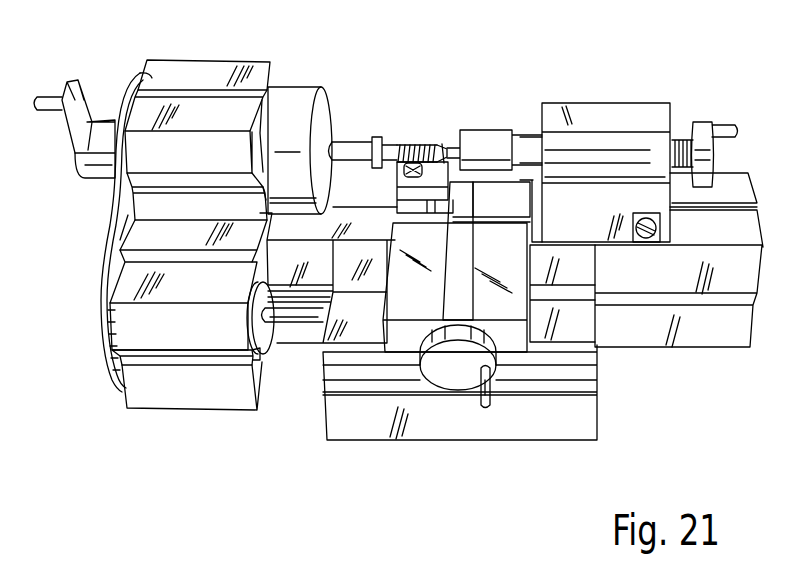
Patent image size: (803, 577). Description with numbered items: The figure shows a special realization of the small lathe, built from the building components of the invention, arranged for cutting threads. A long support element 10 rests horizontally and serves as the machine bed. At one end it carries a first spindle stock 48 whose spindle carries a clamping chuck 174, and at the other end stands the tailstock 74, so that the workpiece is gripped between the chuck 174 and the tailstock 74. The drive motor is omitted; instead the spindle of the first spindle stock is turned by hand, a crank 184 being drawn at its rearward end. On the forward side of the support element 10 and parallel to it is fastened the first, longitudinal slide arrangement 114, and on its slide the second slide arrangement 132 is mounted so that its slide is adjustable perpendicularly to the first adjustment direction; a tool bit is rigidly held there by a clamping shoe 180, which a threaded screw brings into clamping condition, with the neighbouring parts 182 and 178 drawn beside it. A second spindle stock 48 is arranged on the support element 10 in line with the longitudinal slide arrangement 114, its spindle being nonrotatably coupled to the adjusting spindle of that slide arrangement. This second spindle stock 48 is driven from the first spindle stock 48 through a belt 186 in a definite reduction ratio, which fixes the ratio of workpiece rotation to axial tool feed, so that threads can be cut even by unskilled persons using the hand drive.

The crank handle 184 is at (77, 99).
The spindle stock 48 is at (200, 68).
The clamping chuck 174 is at (303, 105).
The belt 186 is at (115, 215).
The clamp block 182 is at (412, 158).
The clamping shoe 180 is at (423, 150).
The spindle tip 178 is at (437, 150).
The tailstock 74 is at (620, 120).
The second slide arrangement 132 is at (409, 351).
The first slide arrangement 114 is at (468, 452).
The support element 10 is at (678, 333).